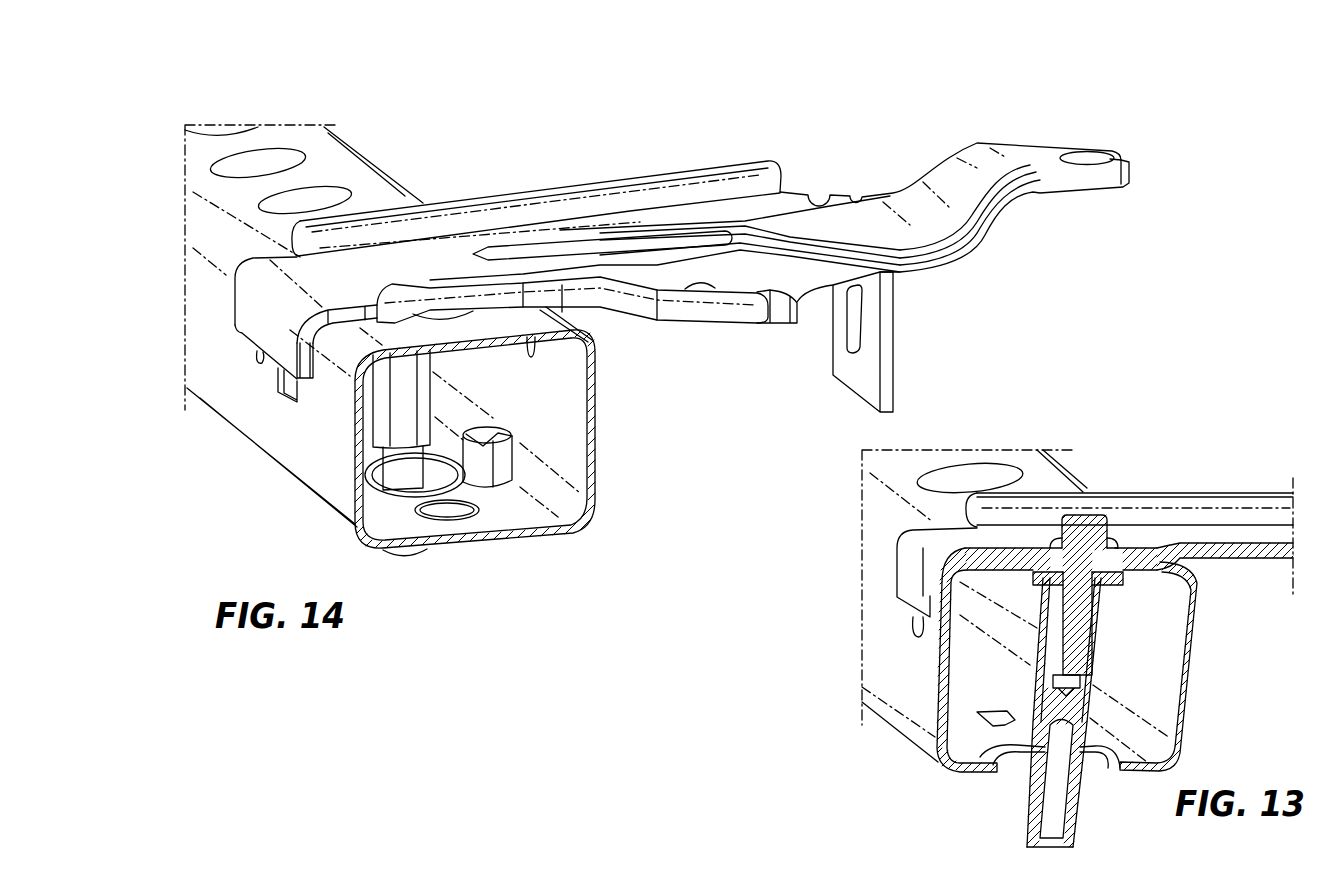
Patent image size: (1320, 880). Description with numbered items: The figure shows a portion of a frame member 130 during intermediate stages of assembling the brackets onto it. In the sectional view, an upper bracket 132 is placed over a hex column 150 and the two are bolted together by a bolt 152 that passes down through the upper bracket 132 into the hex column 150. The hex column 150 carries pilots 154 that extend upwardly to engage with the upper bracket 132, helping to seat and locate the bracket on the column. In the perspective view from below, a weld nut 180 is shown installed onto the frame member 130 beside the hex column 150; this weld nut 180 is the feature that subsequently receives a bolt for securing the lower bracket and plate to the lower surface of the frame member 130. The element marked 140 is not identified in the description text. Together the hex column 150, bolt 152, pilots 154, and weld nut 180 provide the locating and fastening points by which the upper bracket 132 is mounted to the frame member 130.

In FIG. 14, the frame member 130 is at (280, 440).
In FIG. 13, the frame member 130 is at (910, 705).
In FIG. 13, the upper bracket 132 is at (1210, 505).
In FIG. 14, the mounting bracket clip 140 is at (242, 312).
In FIG. 14, the hex column 150 is at (373, 478).
In FIG. 13, the hex column 150 is at (1030, 825).
In FIG. 13, the bolt 152 is at (1083, 512).
In FIG. 13, the pilots 154 is at (1105, 560).
In FIG. 14, the weld nut 180 is at (502, 457).